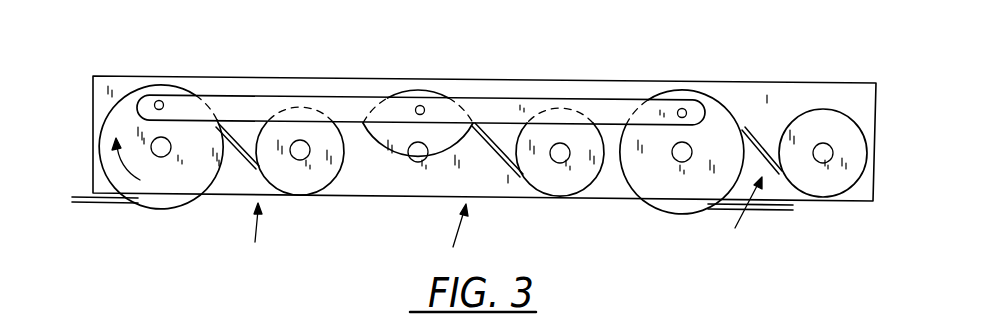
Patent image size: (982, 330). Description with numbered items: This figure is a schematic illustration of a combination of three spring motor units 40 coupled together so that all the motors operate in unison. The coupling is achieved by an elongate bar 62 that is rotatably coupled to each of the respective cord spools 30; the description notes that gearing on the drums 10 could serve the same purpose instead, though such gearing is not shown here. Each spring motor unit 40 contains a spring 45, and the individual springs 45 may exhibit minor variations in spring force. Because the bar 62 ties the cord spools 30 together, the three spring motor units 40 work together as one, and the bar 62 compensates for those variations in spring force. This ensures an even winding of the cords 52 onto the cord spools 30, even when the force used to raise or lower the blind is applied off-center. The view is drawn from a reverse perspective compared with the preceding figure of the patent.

The drum 10 is at (303, 190).
The cord spool 30 is at (158, 207).
The spring motor unit 40 is at (496, 223).
The spring 45 is at (240, 167).
The cord 52 is at (97, 203).
The elongate bar 62 is at (355, 112).